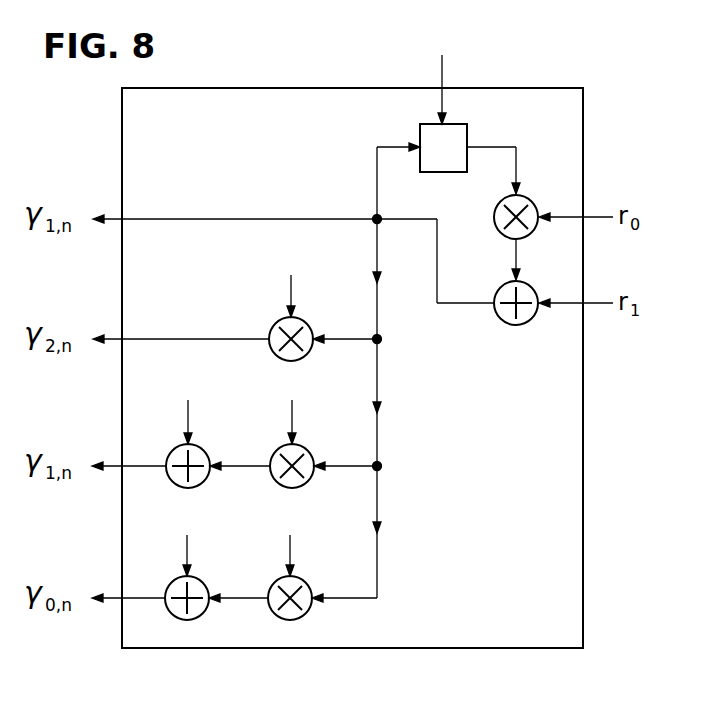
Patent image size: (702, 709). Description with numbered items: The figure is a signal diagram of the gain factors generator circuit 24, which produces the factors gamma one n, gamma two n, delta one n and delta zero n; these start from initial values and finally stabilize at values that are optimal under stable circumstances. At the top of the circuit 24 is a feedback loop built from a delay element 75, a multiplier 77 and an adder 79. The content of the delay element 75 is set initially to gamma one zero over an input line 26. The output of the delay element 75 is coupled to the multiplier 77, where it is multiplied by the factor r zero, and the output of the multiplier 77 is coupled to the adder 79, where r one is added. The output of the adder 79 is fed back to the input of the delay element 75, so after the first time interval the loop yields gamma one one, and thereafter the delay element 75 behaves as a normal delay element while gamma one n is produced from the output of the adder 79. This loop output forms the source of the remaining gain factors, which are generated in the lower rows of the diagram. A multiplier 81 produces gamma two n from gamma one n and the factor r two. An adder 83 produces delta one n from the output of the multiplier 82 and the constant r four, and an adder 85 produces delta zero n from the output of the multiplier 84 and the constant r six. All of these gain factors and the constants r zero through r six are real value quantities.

The gain factors generator circuit 24 is at (572, 104).
The input line 26 is at (446, 68).
The delay element 75 is at (458, 132).
The multiplier 77 is at (522, 202).
The adder 79 is at (522, 290).
The multiplier 81 is at (283, 322).
The multiplier 82 is at (300, 449).
The adder 83 is at (202, 452).
The multiplier 84 is at (298, 582).
The adder 85 is at (200, 585).